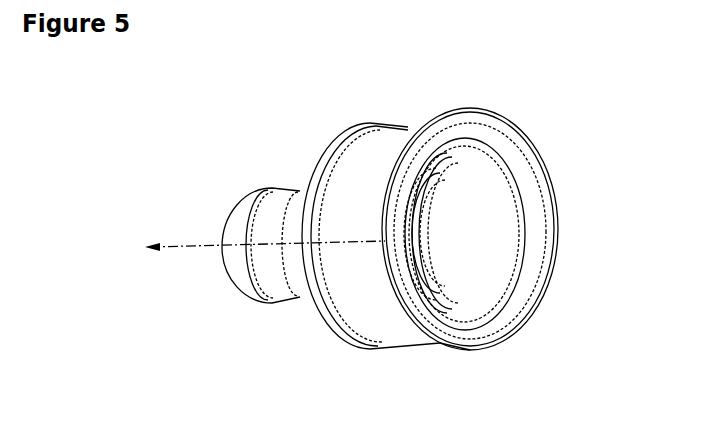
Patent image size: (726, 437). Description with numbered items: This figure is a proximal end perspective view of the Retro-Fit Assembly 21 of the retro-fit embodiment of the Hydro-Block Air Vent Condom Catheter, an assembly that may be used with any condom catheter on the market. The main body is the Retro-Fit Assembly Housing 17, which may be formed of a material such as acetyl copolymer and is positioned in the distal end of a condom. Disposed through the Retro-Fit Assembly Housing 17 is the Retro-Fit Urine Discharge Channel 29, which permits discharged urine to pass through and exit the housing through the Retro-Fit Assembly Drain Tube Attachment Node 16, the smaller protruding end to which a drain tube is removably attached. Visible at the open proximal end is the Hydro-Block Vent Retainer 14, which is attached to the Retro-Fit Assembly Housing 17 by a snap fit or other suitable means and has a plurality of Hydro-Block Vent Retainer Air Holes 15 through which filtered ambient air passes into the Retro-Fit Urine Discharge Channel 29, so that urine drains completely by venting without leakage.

The Hydro-Block Vent Retainer 14 is at (488, 211).
The Hydro-Block Vent Retainer Air Holes 15 is at (442, 181).
The Retro-Fit Assembly Drain Tube Attachment Node 16 is at (230, 220).
The Retro-Fit Assembly Housing 17 is at (318, 317).
The Retro-Fit Assembly 21 is at (350, 164).
The Retro-Fit Urine Discharge Channel 29 is at (383, 236).